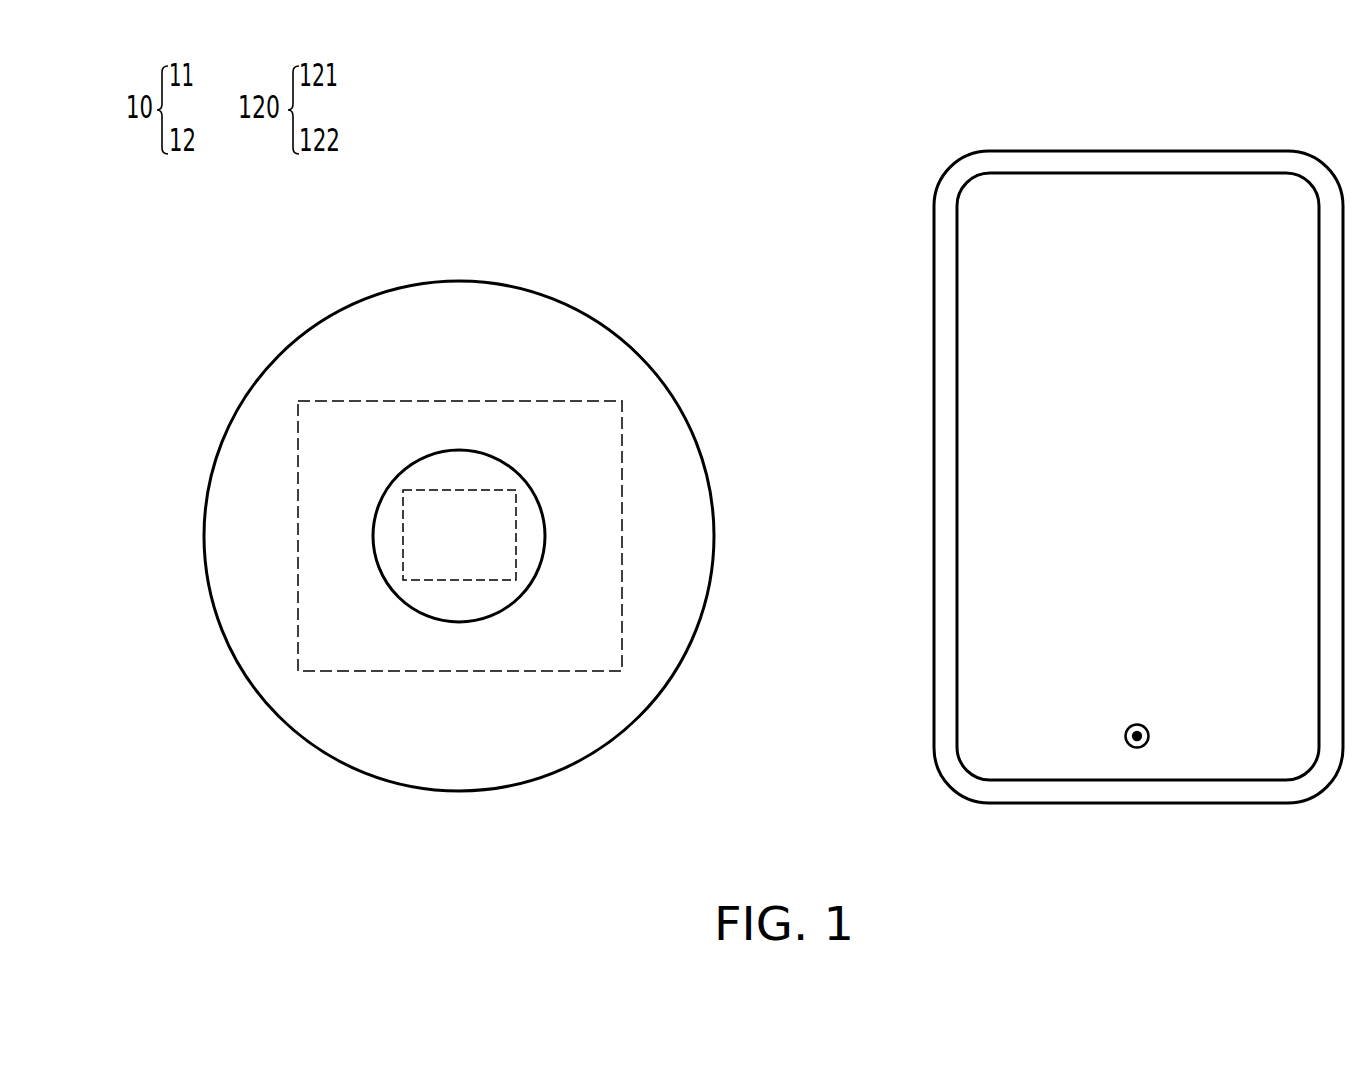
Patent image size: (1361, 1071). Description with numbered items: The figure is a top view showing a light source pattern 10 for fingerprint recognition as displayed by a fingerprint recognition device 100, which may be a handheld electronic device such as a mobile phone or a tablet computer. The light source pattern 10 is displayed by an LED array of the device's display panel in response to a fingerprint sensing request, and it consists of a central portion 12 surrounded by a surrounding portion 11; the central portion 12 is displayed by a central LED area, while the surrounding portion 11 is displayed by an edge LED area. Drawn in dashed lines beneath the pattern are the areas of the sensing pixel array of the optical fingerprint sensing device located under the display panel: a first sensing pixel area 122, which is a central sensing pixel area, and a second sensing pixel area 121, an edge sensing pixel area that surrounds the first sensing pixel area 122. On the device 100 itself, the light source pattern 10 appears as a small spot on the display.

The light source pattern 10 is at (676, 536).
The surrounding portion 11 is at (618, 350).
The central portion 12 is at (497, 470).
The fingerprint recognition device 100 is at (950, 168).
The second sensing pixel area 121 is at (596, 454).
The first sensing pixel area 122 is at (500, 537).